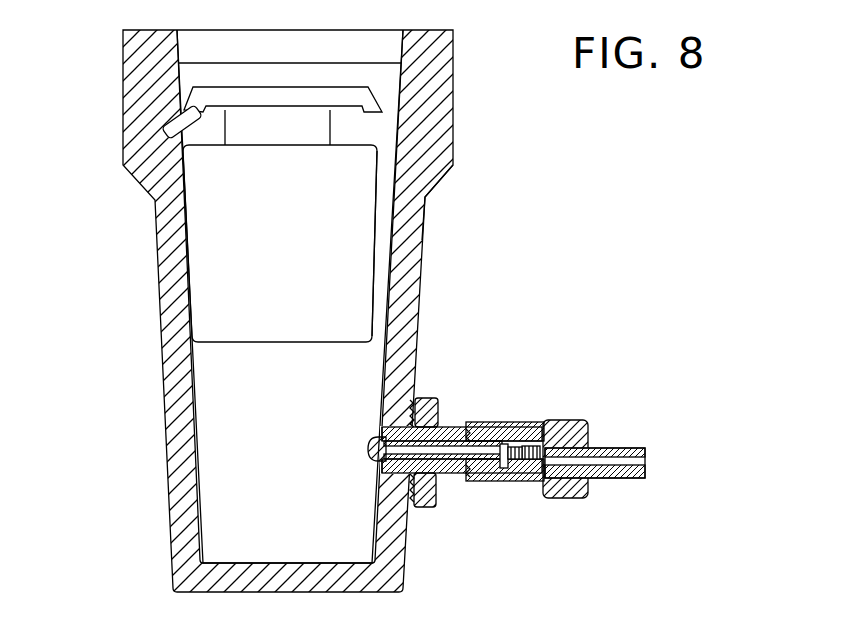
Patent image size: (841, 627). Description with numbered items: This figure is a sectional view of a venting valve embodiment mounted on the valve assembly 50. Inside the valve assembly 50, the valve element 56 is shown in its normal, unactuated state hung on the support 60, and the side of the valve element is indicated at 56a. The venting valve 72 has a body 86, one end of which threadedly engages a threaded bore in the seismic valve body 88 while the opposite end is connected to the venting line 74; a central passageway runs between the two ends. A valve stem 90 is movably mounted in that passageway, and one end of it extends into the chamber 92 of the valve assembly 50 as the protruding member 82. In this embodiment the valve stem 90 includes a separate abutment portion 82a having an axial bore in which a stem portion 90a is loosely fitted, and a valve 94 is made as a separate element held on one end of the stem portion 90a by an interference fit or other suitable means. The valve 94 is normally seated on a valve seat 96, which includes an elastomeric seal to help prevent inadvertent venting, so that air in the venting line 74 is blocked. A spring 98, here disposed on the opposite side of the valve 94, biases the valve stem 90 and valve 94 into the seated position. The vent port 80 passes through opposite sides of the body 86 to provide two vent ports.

The valve assembly 50 is at (134, 340).
The valve element 56 is at (218, 257).
The side of internal body 56a is at (373, 262).
The support 60 is at (173, 120).
The venting valve 72 is at (516, 414).
The venting line 74 is at (638, 440).
The vent port 80 is at (478, 487).
The protruding member 82 is at (370, 450).
The abutment portion 82a is at (398, 433).
The body 86 is at (503, 488).
The seismic valve body 88 is at (423, 240).
The valve stem 90 is at (406, 478).
The stem portion 90a is at (468, 427).
The chamber 92 is at (232, 472).
The valve 94 is at (517, 428).
The valve seat 96 is at (512, 490).
The spring 98 is at (525, 490).